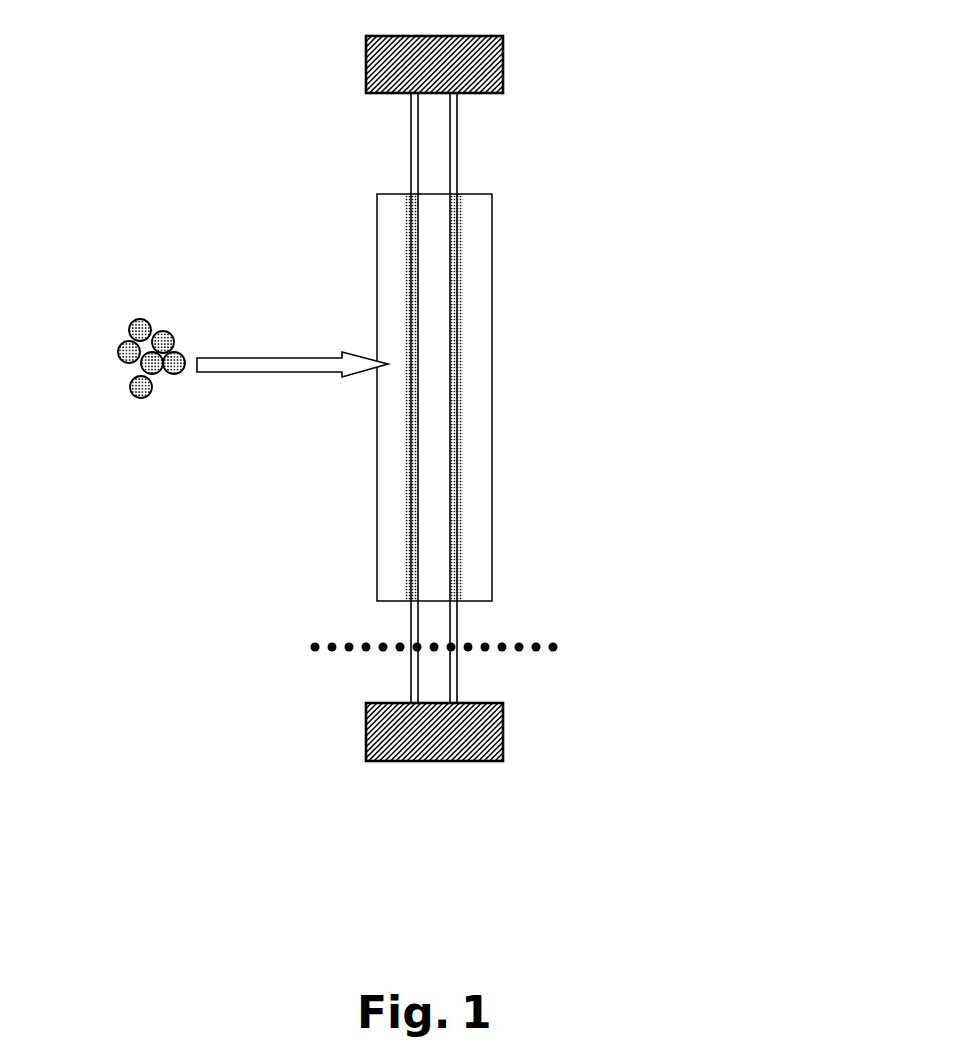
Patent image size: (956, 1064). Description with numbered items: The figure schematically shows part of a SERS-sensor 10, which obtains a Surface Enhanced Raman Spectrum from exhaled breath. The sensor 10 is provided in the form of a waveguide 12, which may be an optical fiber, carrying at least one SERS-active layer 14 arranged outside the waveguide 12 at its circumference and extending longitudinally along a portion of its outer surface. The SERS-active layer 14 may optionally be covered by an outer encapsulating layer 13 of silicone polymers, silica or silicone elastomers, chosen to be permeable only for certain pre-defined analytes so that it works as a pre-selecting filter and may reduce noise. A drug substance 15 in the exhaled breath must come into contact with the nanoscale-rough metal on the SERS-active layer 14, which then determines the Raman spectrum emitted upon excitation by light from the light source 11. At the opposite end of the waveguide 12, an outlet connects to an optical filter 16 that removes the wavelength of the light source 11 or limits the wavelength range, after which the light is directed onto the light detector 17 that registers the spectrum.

The SERS-sensor 10 is at (632, 174).
The light source 11 is at (504, 70).
The waveguide 12 is at (459, 158).
The encapsulating layer 13 is at (470, 398).
The SERS-active layer 14 is at (409, 272).
The drug substance 15 is at (117, 341).
The optical filter 16 is at (307, 646).
The light detector 17 is at (505, 736).